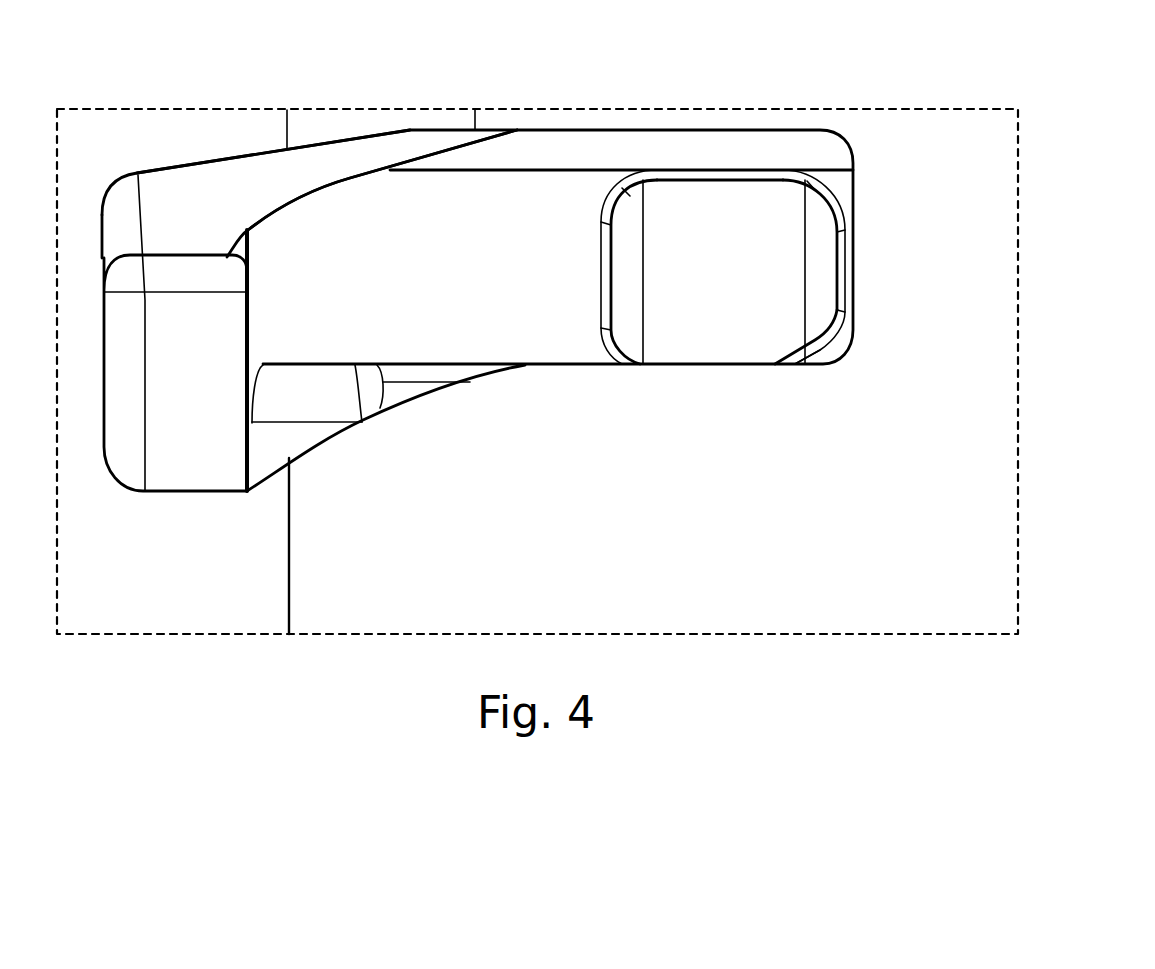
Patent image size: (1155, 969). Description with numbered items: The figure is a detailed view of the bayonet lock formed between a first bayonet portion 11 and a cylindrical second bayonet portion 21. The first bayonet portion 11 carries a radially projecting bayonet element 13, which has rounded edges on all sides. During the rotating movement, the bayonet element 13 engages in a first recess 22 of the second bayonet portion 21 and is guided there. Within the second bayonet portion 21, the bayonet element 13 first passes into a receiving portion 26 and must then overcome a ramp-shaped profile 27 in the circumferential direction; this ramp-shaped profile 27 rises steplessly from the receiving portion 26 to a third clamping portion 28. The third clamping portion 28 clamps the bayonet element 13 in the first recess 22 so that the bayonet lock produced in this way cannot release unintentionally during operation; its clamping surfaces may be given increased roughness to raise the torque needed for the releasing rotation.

The first bayonet portion 11 is at (555, 188).
The bayonet element 13 is at (722, 362).
The second bayonet portion 21 is at (987, 234).
The first recess 22 is at (435, 197).
The receiving portion 26 is at (213, 491).
The ramp-shaped profile 27 is at (437, 395).
The third clamping portion 28 is at (812, 365).